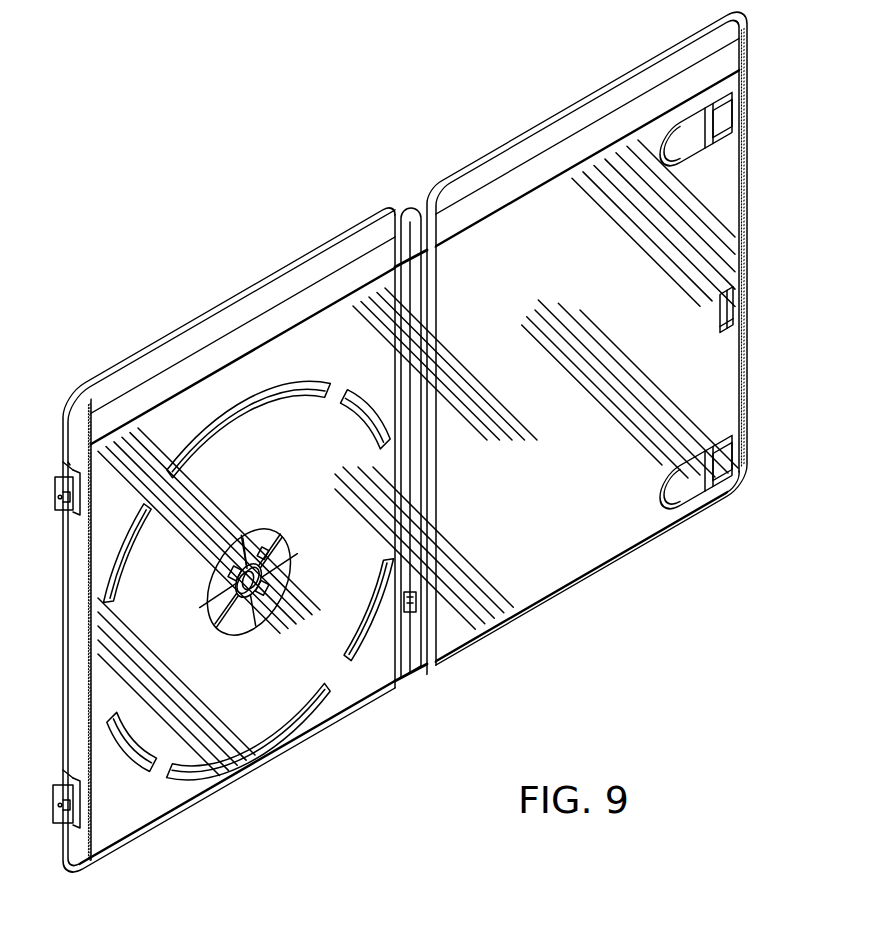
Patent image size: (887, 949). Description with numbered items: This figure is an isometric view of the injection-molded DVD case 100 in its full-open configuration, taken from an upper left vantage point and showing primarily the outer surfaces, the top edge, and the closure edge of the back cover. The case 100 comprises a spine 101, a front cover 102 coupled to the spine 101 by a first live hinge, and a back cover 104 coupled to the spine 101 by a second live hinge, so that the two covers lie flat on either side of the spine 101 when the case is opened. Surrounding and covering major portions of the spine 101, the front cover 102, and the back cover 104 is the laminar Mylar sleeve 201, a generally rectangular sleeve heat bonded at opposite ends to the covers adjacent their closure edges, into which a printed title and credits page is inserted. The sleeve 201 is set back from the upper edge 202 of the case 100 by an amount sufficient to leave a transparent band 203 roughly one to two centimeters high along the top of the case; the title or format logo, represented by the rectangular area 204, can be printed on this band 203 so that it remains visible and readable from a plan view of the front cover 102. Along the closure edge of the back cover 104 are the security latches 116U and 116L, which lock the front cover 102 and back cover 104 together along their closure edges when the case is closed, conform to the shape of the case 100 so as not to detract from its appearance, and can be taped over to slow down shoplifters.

The injection-molded DVD case 100 is at (388, 459).
The spine 101 is at (410, 207).
The front cover 102 is at (587, 339).
The back cover 104 is at (283, 559).
The upper security latch 116U is at (55, 478).
The lower security latch 116L is at (58, 815).
The laminar Mylar sleeve 201 is at (243, 356).
The upper edge 202 is at (587, 339).
The transparent band 203 is at (587, 126).
The rectangular area 204 is at (510, 190).